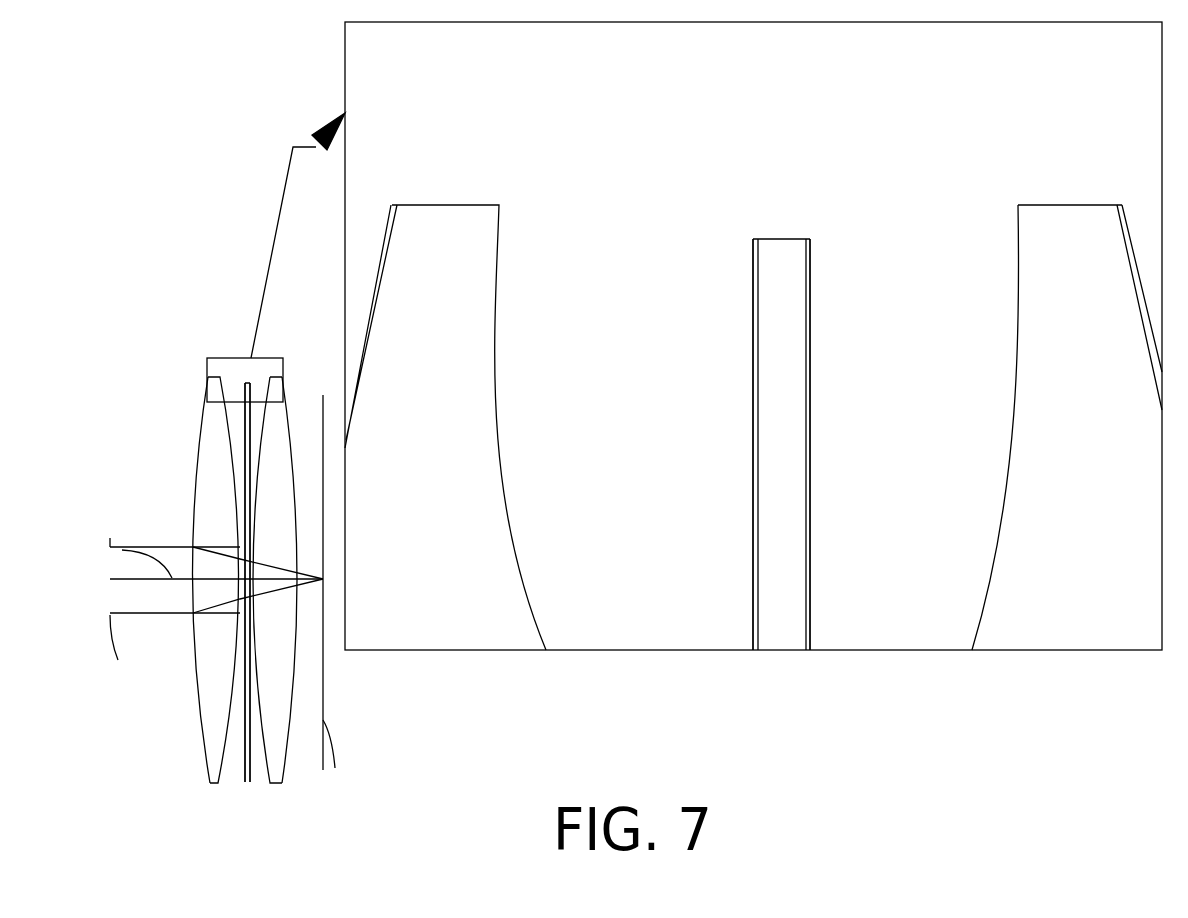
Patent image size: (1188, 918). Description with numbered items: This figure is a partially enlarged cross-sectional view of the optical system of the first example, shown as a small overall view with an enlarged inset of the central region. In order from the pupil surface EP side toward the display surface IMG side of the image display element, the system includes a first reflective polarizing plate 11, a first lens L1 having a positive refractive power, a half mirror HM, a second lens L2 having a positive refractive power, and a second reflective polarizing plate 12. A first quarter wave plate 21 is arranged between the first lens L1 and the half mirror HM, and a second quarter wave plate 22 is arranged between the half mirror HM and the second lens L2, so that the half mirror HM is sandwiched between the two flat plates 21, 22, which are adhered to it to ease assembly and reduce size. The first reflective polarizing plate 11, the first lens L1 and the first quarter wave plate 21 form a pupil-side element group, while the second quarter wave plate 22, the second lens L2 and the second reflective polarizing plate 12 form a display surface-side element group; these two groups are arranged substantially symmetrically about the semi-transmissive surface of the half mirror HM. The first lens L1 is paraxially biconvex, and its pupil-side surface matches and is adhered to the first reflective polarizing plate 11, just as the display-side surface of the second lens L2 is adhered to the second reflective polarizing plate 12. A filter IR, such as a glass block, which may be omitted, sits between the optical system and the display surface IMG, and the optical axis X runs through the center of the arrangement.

The first reflective polarizing plate 11 is at (198, 428).
The second reflective polarizing plate 12 is at (286, 394).
The first quarter wave plate 21 is at (245, 382).
The second quarter wave plate 22 is at (251, 380).
The half mirror HM is at (245, 382).
The first lens L1 is at (208, 376).
The second lens L2 is at (270, 376).
The filter IR is at (331, 565).
The display surface IMG is at (345, 756).
The pupil surface EP is at (125, 654).
The optical axis X is at (141, 563).